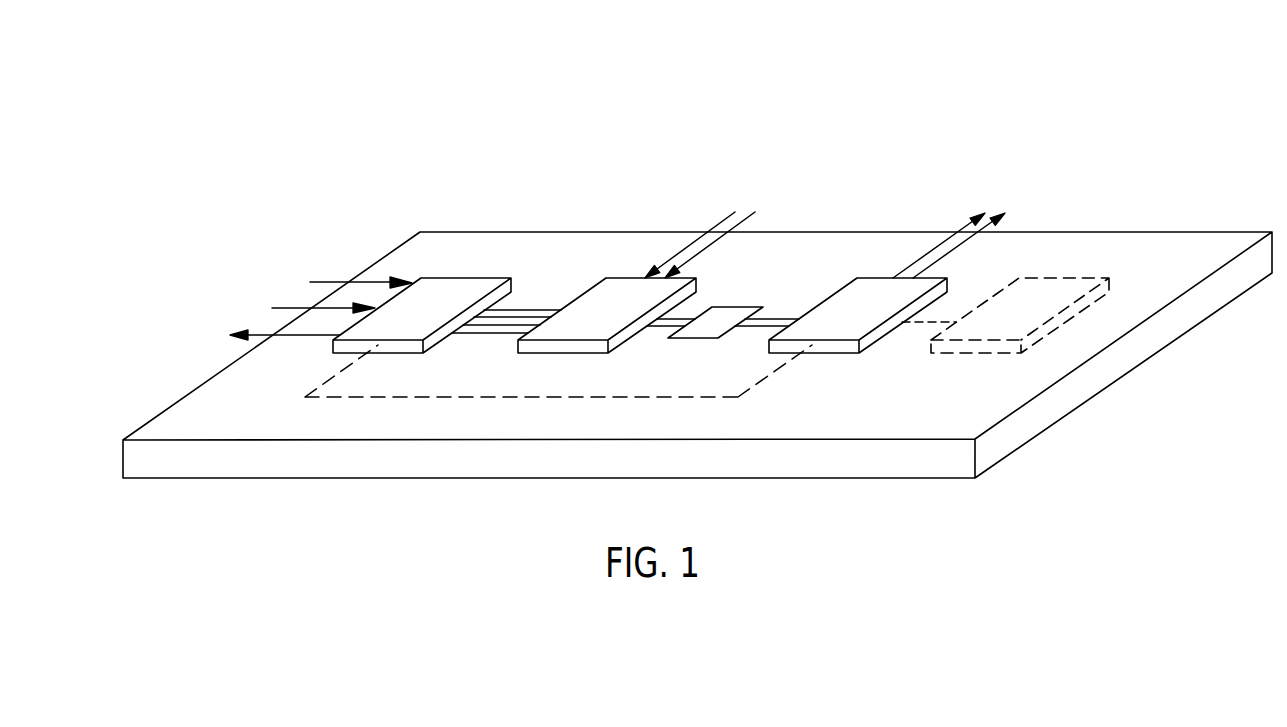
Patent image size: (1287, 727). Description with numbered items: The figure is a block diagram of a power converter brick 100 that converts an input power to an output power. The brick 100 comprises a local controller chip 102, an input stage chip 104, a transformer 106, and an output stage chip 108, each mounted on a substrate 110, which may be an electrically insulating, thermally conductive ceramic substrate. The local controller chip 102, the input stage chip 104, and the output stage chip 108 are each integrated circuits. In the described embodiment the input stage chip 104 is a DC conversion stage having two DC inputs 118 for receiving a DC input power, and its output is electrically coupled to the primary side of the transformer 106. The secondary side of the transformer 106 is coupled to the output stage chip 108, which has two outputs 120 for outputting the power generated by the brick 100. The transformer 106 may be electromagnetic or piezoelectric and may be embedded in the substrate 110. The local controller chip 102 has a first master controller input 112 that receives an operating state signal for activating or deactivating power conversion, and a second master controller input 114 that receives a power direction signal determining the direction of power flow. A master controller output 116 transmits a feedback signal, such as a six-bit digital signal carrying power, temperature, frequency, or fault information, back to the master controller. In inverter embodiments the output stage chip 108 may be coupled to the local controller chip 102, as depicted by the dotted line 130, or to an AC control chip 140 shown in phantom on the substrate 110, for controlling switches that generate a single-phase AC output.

The power converter brick 100 is at (1097, 81).
The local controller chip 102 is at (443, 317).
The input stage chip 104 is at (628, 317).
The transformer 106 is at (740, 306).
The output stage chip 108 is at (877, 317).
The substrate 110 is at (260, 416).
The first master controller input 112 is at (340, 282).
The second master controller input 114 is at (303, 309).
The master controller output 116 is at (266, 334).
The DC inputs 118 is at (707, 230).
The outputs 120 is at (956, 230).
The dotted line 130 is at (482, 396).
The AC control chip 140 is at (1038, 317).